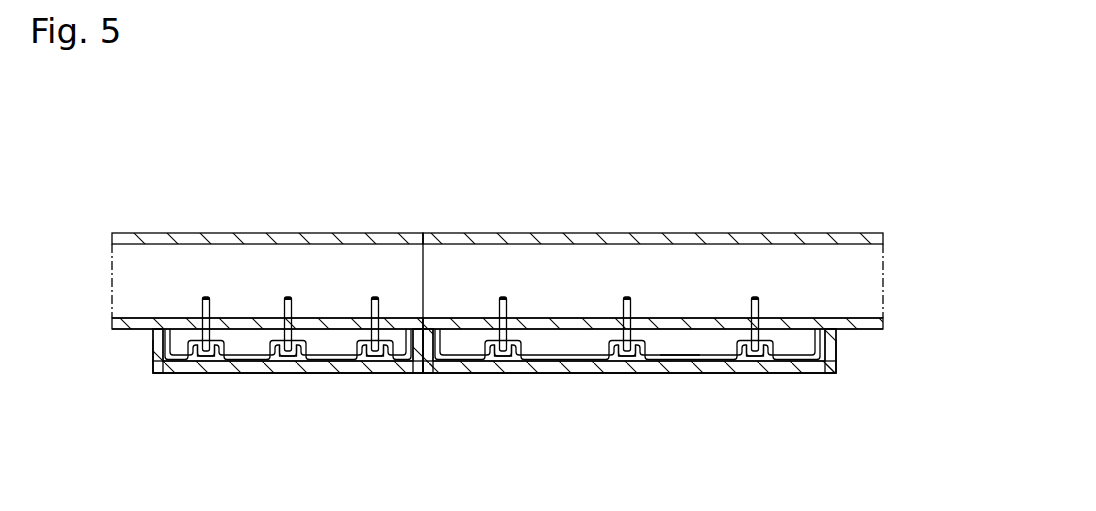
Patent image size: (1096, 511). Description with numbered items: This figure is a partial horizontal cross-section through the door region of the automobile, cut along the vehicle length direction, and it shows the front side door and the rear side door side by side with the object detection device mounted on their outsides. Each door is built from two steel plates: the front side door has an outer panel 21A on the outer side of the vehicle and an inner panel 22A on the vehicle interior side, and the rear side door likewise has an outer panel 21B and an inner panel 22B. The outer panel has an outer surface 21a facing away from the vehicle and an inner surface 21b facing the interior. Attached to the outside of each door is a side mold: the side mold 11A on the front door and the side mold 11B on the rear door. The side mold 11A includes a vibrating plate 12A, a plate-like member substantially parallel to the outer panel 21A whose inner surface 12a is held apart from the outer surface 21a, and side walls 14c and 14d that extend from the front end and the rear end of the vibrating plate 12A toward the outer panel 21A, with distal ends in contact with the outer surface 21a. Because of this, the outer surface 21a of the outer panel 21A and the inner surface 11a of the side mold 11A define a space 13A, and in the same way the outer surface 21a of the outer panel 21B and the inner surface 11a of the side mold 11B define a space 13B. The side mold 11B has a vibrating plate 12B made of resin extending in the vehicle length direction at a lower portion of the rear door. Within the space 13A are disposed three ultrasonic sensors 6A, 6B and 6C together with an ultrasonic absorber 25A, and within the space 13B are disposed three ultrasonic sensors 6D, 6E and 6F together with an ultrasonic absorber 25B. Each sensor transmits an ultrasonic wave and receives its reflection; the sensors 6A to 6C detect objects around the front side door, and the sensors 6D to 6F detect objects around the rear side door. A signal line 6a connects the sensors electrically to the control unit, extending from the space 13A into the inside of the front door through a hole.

The space 13A is at (672, 332).
The space 13B is at (243, 332).
The inner panel 22A is at (800, 233).
The inner panel 22B is at (322, 233).
The outer panel 21A is at (877, 318).
The outer panel 21B is at (125, 316).
The outer surface 21a is at (130, 331).
The inner surface 21b is at (163, 318).
The signal line 6a is at (206, 296).
The ultrasonic sensor 6A is at (755, 362).
The ultrasonic sensor 6B is at (627, 362).
The ultrasonic sensor 6C is at (503, 362).
The ultrasonic sensor 6D is at (375, 362).
The ultrasonic sensor 6E is at (289, 362).
The ultrasonic sensor 6F is at (207, 362).
The side mold 11A is at (655, 405).
The side mold 11B is at (274, 418).
The vibrating plate 12A is at (788, 367).
The vibrating plate 12B is at (181, 366).
The inner surface 11a is at (492, 402).
The inner surface 12a is at (167, 352).
The side wall 14c is at (832, 355).
The side wall 14d is at (157, 352).
The ultrasonic absorber 25A is at (693, 360).
The ultrasonic absorber 25B is at (492, 416).